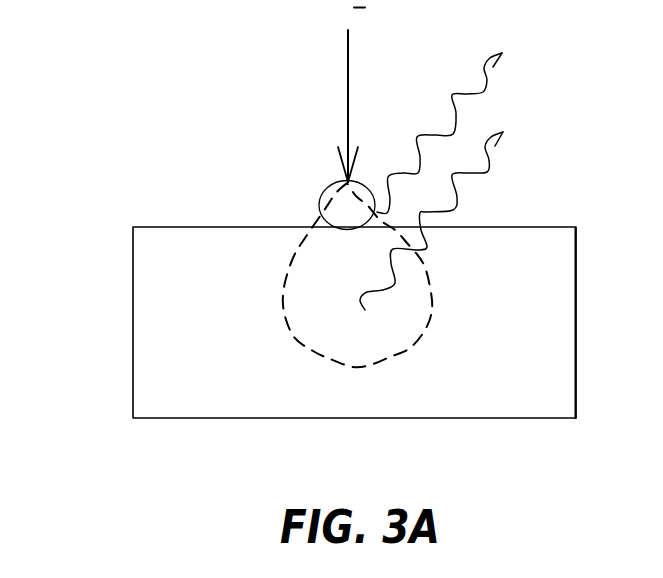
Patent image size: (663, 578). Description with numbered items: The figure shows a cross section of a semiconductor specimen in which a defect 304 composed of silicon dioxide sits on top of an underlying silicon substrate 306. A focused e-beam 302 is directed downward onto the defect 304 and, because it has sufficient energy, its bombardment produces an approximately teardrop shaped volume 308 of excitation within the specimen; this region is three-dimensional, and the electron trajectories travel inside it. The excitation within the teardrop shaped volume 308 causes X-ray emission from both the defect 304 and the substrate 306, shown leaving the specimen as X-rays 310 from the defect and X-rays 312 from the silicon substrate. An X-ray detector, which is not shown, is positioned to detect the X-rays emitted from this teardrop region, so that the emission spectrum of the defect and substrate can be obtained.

The focused e-beam 302 is at (343, 95).
The defect 304 is at (318, 198).
The underlying substrate 306 is at (120, 227).
The teardrop shaped volume 308 is at (380, 363).
The X-rays 310 is at (488, 87).
The X-rays 312 is at (488, 155).